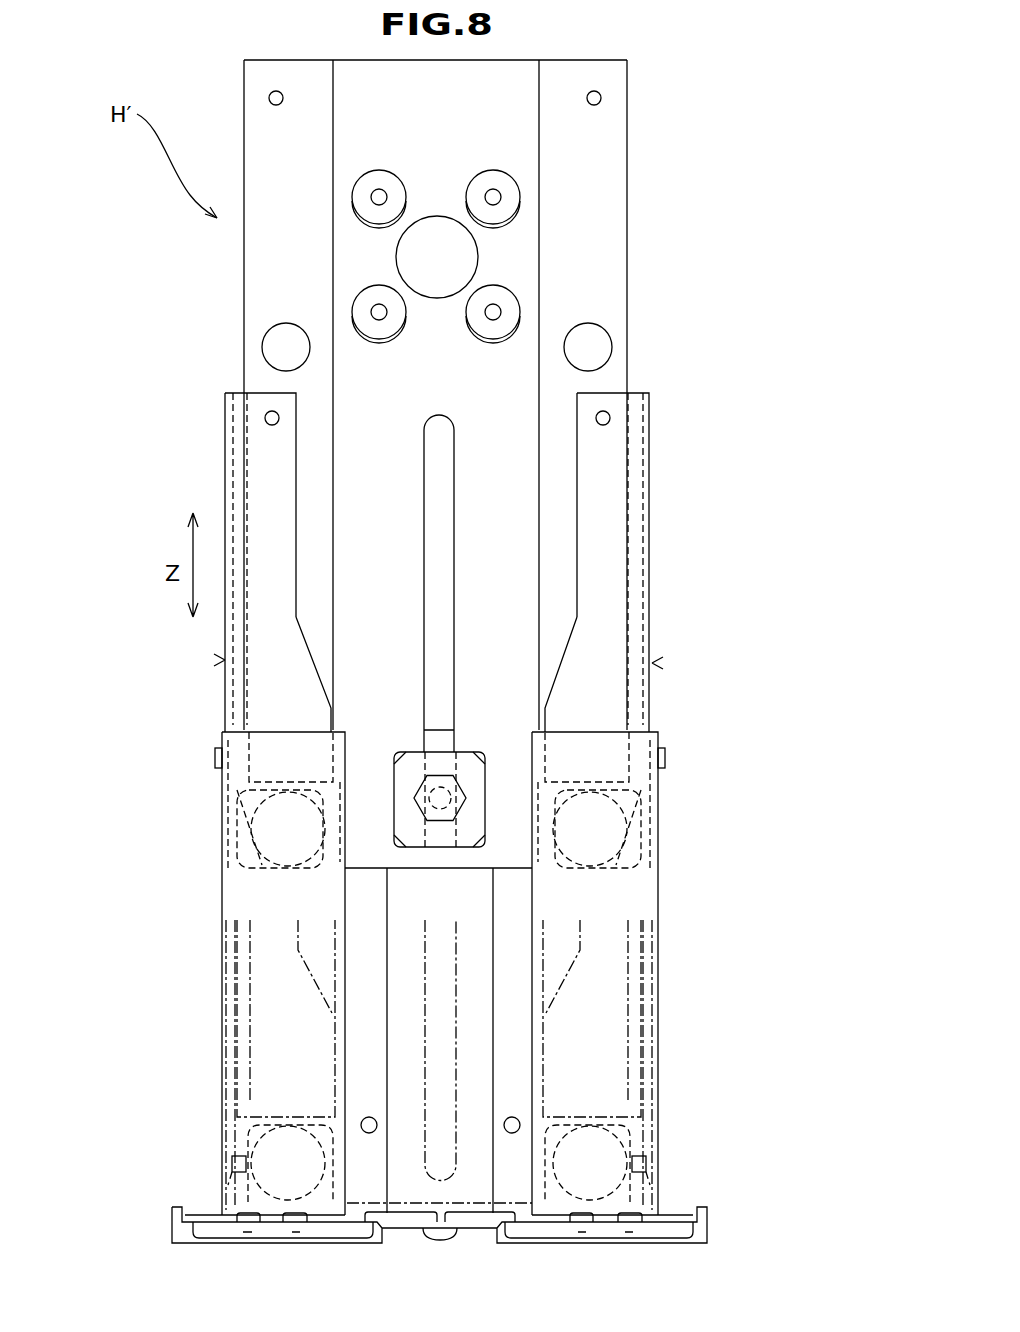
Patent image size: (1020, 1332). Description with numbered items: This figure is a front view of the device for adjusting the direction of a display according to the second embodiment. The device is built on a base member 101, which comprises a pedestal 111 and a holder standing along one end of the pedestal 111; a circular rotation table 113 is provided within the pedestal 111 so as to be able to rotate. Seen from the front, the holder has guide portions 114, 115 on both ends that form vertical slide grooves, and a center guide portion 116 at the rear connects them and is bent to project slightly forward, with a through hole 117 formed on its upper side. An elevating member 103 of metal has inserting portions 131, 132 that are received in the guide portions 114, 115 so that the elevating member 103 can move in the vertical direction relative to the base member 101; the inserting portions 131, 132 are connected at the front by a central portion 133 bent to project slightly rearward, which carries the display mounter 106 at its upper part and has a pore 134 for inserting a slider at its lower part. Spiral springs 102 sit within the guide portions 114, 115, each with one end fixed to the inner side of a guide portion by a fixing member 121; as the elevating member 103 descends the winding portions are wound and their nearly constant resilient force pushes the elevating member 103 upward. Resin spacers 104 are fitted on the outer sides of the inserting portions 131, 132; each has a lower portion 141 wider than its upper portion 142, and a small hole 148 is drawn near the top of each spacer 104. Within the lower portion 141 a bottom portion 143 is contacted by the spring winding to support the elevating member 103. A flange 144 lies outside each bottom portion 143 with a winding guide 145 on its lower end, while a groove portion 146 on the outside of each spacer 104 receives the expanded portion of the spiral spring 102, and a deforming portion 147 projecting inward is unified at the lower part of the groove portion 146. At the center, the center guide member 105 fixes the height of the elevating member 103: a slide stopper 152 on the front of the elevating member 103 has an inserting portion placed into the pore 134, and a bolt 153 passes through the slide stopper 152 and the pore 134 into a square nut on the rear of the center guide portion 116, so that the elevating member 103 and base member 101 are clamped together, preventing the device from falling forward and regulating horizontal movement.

The base member 101 is at (210, 1058).
The spiral spring 102 is at (228, 905).
The elevating member 103 is at (655, 301).
The spacer 104 is at (225, 660).
The center guide member 105 is at (513, 773).
The display mounter 106 is at (506, 259).
The pedestal 111 is at (682, 1213).
The circular rotation table 113 is at (668, 1243).
The guide portion 114 is at (233, 898).
The guide portion 115 is at (610, 970).
The center guide portion 116 is at (478, 1050).
The through hole 117 is at (414, 752).
The fixing member 121 is at (217, 762).
The inserting portion 131 is at (262, 373).
The inserting portion 132 is at (612, 376).
The central portion 133 is at (515, 577).
The pore for inserting a slider 134 is at (455, 528).
The lower portion 141 is at (268, 677).
The upper portion 142 is at (262, 456).
The bottom portion 143 is at (240, 812).
The flange 144 is at (235, 835).
The winding guide 145 is at (235, 870).
The groove portion 146 is at (225, 483).
The deforming portion 147 is at (228, 790).
The pin hole 148 is at (265, 419).
The slide stopper 152 is at (463, 835).
The bolt 153 is at (422, 830).